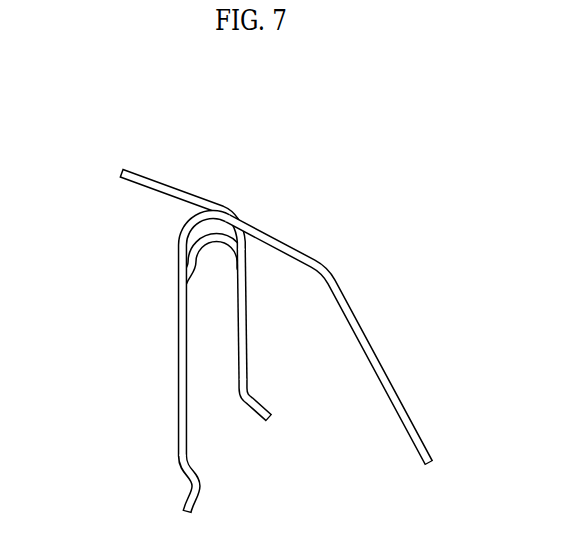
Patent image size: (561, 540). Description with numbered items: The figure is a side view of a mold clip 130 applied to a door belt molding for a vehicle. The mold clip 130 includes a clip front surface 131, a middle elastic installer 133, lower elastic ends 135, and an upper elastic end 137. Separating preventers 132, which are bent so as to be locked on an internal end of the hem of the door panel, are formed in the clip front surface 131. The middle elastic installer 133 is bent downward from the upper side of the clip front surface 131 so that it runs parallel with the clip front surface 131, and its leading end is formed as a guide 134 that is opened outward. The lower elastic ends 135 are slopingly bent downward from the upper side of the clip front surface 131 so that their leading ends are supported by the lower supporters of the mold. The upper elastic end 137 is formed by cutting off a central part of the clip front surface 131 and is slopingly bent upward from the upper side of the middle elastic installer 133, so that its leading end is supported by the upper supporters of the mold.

The mold clip 130 is at (249, 293).
The clip front surface 131 is at (180, 370).
The separating preventer 132 is at (192, 490).
The middle elastic installer 133 is at (247, 326).
The guide 134 is at (267, 405).
The lower elastic end 135 is at (392, 387).
The upper elastic end 137 is at (120, 172).